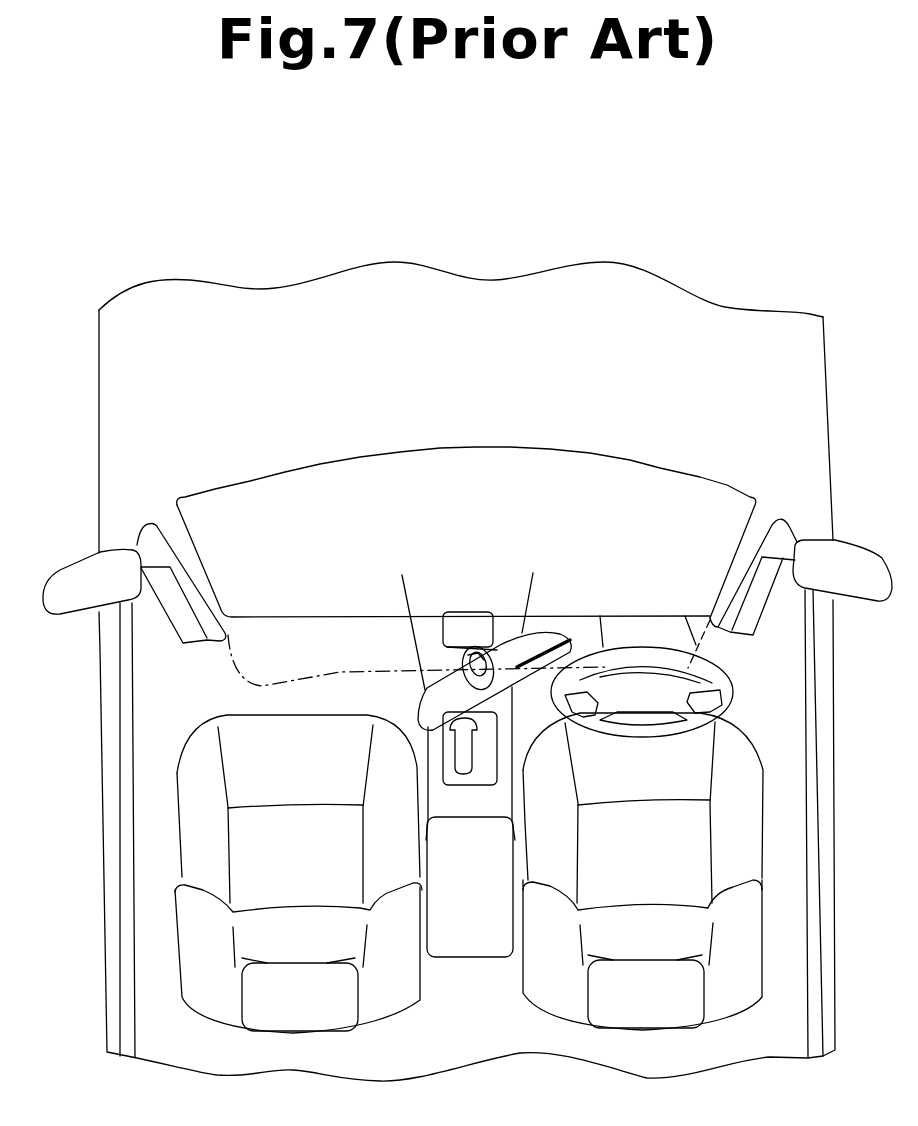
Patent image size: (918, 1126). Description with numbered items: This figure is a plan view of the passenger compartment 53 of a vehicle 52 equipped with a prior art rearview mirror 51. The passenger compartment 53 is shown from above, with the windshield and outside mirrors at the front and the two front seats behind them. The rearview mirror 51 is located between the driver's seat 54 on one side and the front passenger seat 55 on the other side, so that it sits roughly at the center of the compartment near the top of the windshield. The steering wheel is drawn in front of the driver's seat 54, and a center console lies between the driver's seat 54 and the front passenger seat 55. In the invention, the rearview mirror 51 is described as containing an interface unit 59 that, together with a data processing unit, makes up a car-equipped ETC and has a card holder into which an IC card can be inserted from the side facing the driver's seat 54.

The rearview mirror 51 is at (515, 637).
The vehicle 52 is at (742, 268).
The passenger compartment 53 is at (494, 1004).
The driver's seat 54 is at (742, 740).
The front passenger seat 55 is at (197, 755).
The interface unit 59 is at (553, 637).